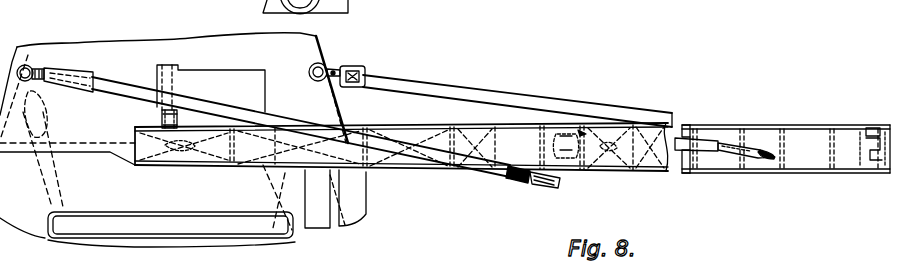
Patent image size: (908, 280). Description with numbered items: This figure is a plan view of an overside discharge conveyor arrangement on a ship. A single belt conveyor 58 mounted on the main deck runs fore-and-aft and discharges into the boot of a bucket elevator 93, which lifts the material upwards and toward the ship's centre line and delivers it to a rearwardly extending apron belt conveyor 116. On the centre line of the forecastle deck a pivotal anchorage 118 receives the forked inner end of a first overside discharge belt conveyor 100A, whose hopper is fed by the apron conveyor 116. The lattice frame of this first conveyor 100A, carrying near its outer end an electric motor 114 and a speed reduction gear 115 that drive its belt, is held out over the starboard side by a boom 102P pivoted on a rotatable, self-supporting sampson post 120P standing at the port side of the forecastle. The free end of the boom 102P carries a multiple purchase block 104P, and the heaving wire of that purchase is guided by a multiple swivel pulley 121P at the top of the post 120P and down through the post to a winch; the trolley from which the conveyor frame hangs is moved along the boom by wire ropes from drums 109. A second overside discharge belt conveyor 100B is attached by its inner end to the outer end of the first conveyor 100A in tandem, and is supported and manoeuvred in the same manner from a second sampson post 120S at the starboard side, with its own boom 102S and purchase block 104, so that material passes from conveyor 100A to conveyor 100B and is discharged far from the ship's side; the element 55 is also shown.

The bumper 55 is at (233, 226).
The belt conveyor 58 is at (322, 220).
The bucket elevator 93 is at (261, 92).
The first overside discharge belt conveyor 100A is at (441, 173).
The second overside discharge belt conveyor 100B is at (727, 135).
The boom 102P is at (310, 77).
The starboard hydraulic arm 102S is at (497, 98).
The lock arm 104 is at (732, 160).
The multiple purchase block 104P is at (532, 185).
The drums 109 is at (360, 80).
The electric motor 114 is at (576, 172).
The speed reduction gear 115 is at (580, 130).
The apron belt conveyor 116 is at (160, 118).
The pivotal anchorage 118 is at (145, 170).
The rotatable sampson post 120P is at (30, 66).
The second sampson post 120S is at (326, 65).
The multiple swivel pulley 121P is at (50, 68).